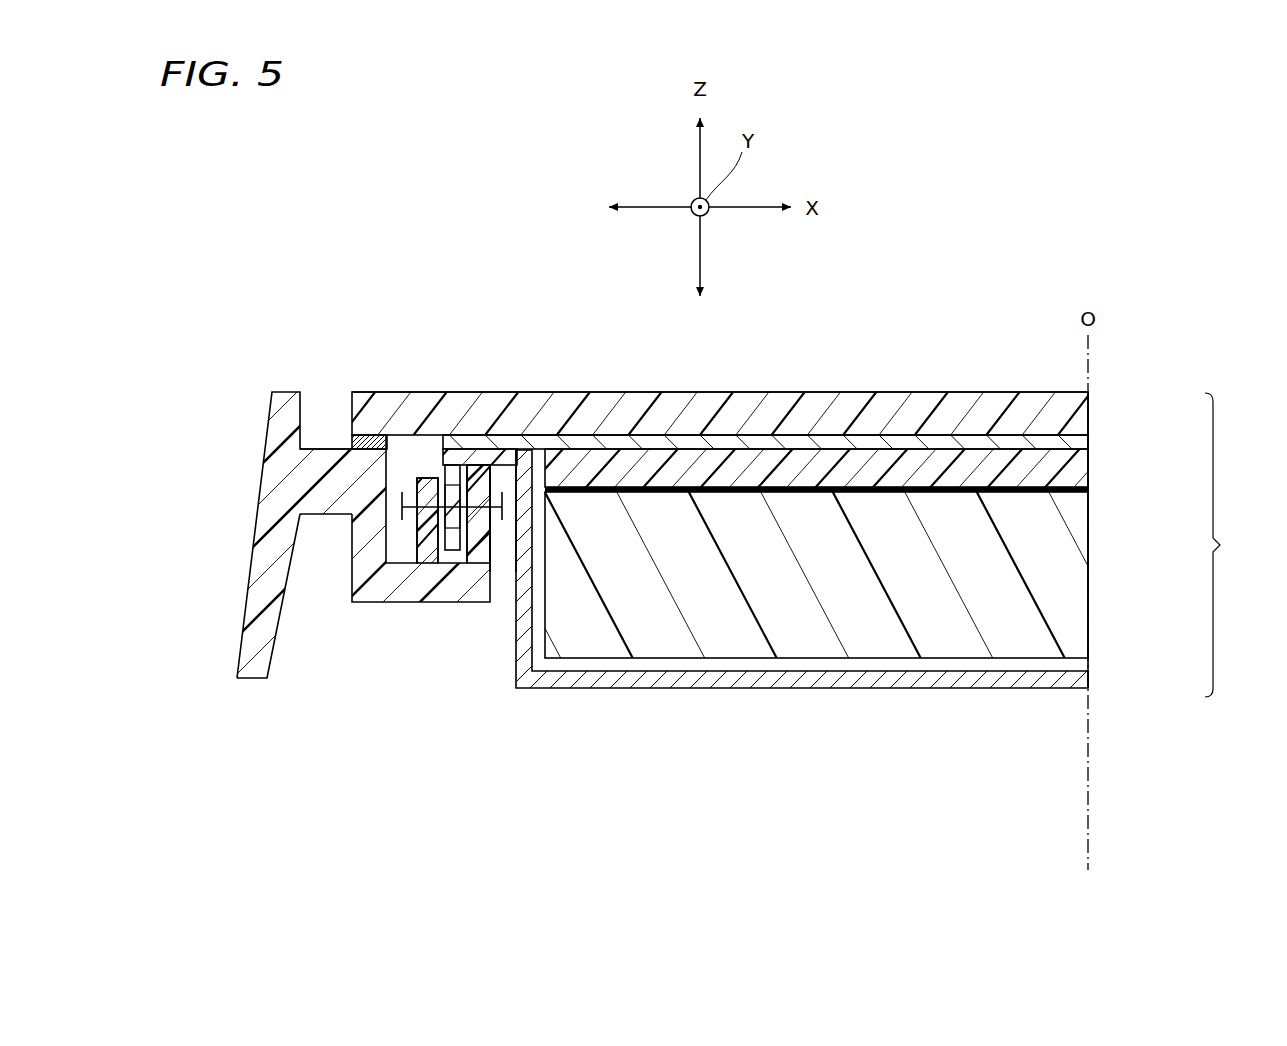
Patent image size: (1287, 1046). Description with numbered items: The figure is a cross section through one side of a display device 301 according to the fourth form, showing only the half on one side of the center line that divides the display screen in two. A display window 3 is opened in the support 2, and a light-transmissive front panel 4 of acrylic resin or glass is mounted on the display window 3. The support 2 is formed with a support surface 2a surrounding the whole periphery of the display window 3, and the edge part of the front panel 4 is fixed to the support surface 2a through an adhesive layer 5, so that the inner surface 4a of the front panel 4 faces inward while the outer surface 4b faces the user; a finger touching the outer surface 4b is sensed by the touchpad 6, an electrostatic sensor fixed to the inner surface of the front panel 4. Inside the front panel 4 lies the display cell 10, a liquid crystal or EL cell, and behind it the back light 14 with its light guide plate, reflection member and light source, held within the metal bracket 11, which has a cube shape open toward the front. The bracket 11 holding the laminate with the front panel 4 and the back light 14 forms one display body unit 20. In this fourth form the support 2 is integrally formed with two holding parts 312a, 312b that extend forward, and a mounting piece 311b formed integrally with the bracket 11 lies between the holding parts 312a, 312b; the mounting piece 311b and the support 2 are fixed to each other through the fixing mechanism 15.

The support 2 is at (273, 483).
The support surface 2a is at (330, 447).
The display window 3 is at (410, 457).
The front panel 4 is at (920, 407).
The inner surface 4a is at (772, 440).
The outer surface 4b is at (641, 392).
The adhesive layer 5 is at (366, 446).
The touchpad 6 is at (1080, 443).
The display cell 10 is at (1075, 471).
The bracket 11 is at (818, 688).
The back light 14 is at (1073, 577).
The fixing mechanism 15 is at (514, 529).
The display body unit 20 is at (1229, 545).
The display device 301 is at (1013, 284).
The mounting piece 311b is at (447, 553).
The holding part 312a is at (423, 533).
The holding part 312b is at (480, 530).